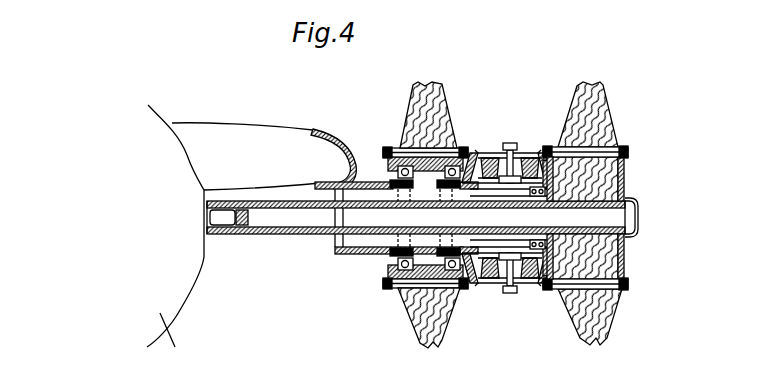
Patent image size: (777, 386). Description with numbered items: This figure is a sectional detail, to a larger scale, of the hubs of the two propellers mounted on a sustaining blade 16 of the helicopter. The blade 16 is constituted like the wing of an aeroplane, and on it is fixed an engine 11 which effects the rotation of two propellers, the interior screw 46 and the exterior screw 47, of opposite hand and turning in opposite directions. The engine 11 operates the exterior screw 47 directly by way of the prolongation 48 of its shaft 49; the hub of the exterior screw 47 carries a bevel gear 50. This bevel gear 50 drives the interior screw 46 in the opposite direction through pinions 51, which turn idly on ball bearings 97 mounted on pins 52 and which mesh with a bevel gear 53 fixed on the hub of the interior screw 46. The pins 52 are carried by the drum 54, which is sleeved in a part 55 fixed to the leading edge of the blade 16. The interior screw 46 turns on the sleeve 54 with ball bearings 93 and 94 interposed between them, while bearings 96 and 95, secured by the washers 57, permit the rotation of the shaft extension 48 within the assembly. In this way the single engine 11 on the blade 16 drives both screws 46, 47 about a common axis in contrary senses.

The engine 11 is at (175, 230).
The sustaining blade 16 is at (264, 138).
The interior screw 46 is at (438, 347).
The exterior screw 47 is at (598, 337).
The shaft prolongation 48 is at (278, 237).
The shaft 49 is at (223, 223).
The bevel gear 50 is at (542, 278).
The pinion 51 is at (492, 165).
The pin 52 is at (512, 275).
The bevel gear 53 is at (475, 272).
The drum 54 is at (462, 167).
The fixed part 55 is at (370, 183).
The washer 57 is at (367, 253).
The ball bearing 93 is at (405, 148).
The ball bearing 94 is at (452, 145).
The bearing 95 is at (560, 186).
The bearing 96 is at (388, 237).
The ball bearing 97 is at (518, 155).